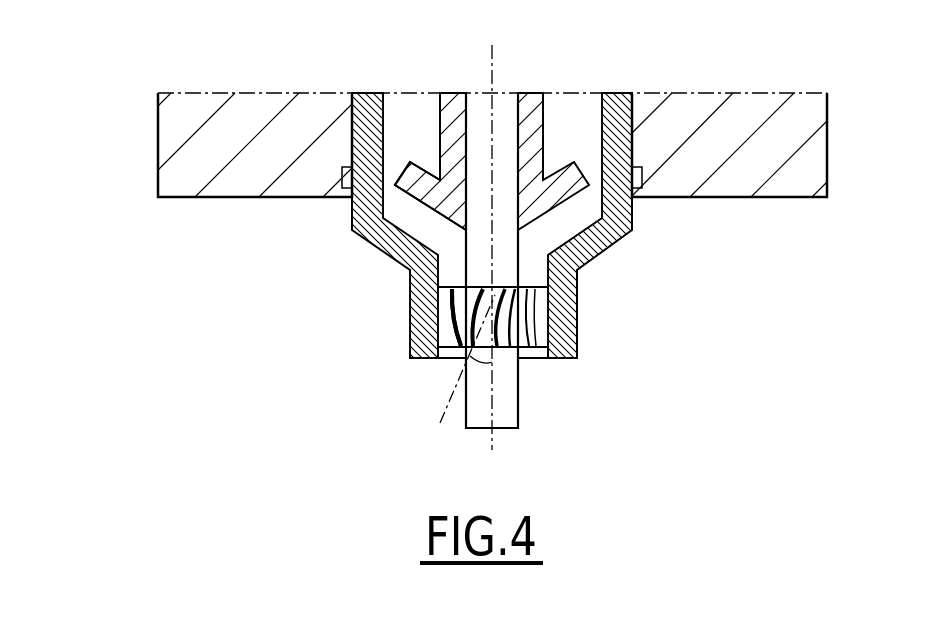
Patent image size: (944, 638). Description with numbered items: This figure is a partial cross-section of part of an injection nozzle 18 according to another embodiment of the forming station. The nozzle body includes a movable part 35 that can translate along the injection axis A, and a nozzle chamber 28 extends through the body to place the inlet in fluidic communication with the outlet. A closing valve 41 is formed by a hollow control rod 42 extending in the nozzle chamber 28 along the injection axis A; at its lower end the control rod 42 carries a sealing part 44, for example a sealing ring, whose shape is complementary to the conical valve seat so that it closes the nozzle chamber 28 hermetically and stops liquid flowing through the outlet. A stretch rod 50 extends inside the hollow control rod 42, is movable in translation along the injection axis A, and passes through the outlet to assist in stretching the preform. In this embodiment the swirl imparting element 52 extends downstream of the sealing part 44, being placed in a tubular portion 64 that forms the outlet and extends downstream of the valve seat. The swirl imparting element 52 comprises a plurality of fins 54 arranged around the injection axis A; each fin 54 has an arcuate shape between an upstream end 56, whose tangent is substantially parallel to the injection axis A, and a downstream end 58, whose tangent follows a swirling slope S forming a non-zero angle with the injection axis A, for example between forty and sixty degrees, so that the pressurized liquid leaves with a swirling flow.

The injection nozzle 18 is at (268, 133).
The nozzle chamber 28 is at (400, 120).
The movable part 35 is at (363, 150).
The closing valve 41 is at (452, 133).
The hollow control rod 42 is at (532, 107).
The sealing part 44 is at (420, 183).
The stretch rod 50 is at (505, 120).
The swirl imparting element 52 is at (577, 328).
The fin 54 is at (445, 320).
The upstream end 56 is at (450, 283).
The downstream end 58 is at (437, 358).
The tubular portion 64 is at (560, 299).
The injection axis A is at (490, 63).
The swirling slope S is at (442, 417).